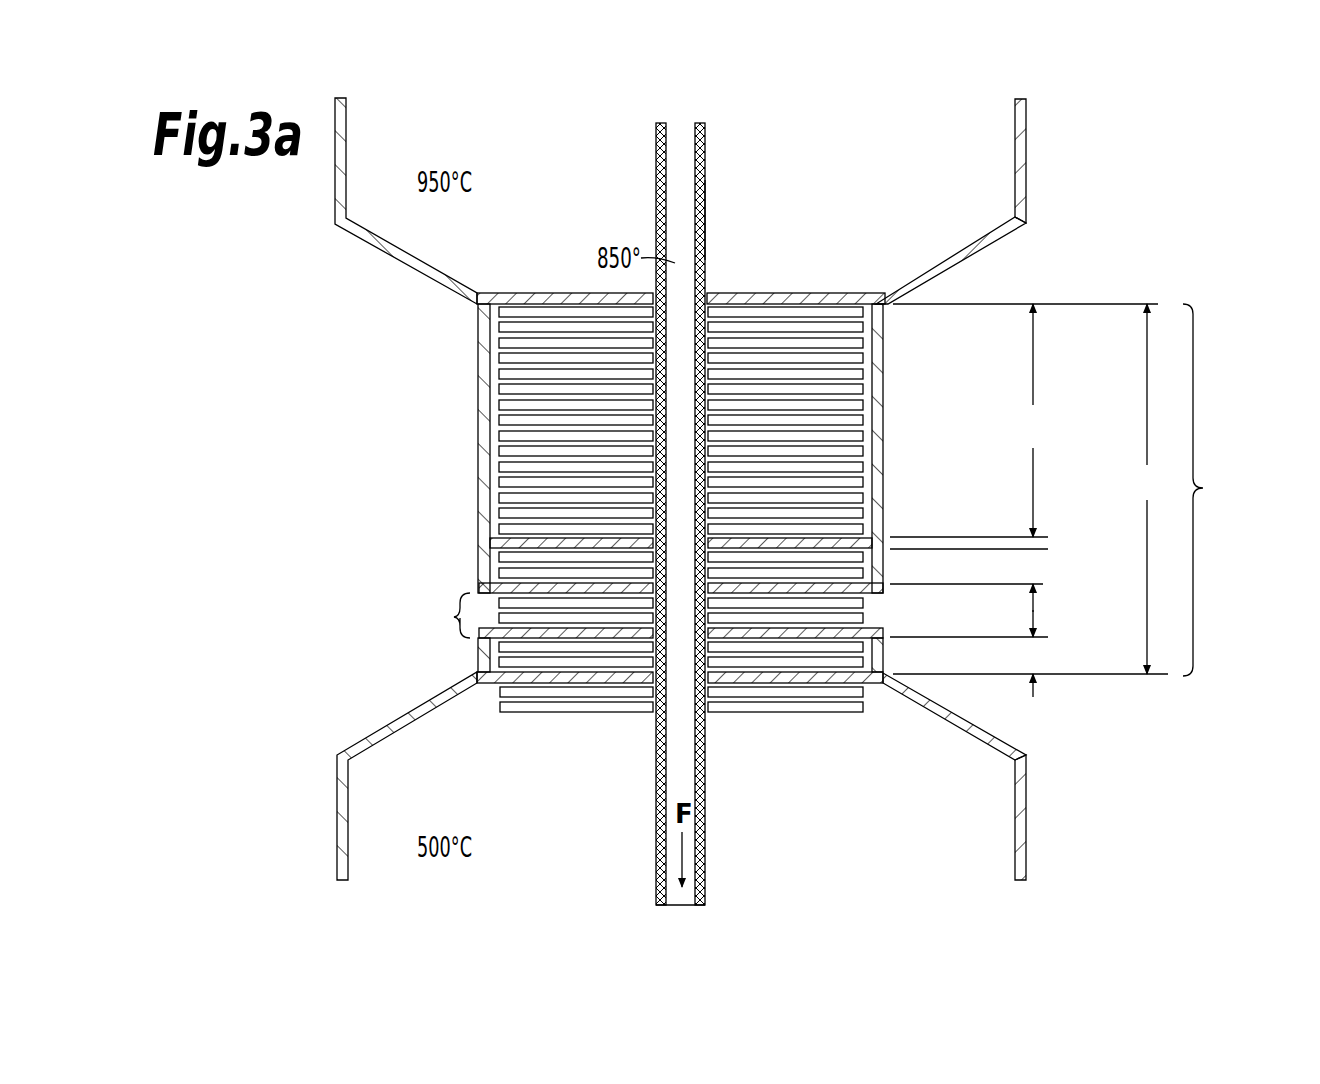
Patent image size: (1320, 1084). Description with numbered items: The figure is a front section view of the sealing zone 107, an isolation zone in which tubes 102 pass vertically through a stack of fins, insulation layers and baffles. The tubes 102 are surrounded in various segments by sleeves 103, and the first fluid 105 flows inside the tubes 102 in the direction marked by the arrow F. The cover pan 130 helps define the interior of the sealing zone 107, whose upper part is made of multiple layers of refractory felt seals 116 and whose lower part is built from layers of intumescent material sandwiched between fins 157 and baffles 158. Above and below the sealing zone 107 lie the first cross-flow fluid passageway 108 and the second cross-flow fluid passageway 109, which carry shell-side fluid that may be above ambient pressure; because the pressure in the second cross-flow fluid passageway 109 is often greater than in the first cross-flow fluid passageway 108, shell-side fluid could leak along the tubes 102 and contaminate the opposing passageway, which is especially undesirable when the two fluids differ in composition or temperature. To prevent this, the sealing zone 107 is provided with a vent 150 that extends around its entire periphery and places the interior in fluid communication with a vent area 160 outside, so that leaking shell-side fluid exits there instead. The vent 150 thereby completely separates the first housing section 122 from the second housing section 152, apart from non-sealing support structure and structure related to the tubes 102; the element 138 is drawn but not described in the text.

The tubes 102 is at (700, 158).
The sleeves 103 is at (705, 228).
The first fluid 105 is at (690, 771).
The sealing zone 107 is at (1064, 522).
The first cross-flow fluid passageway 108 is at (1002, 148).
The second cross-flow fluid passageway 109 is at (1005, 835).
The refractory felt seals 116 is at (500, 344).
The first housing section 122 is at (1027, 197).
The cover pan 130 is at (478, 440).
The lower hatched plate and wall 138 is at (485, 633).
The vent 150 is at (445, 615).
The second housing section 152 is at (1027, 780).
The fins 157 is at (852, 565).
The baffles 158 is at (495, 543).
The vent area 160 is at (495, 776).